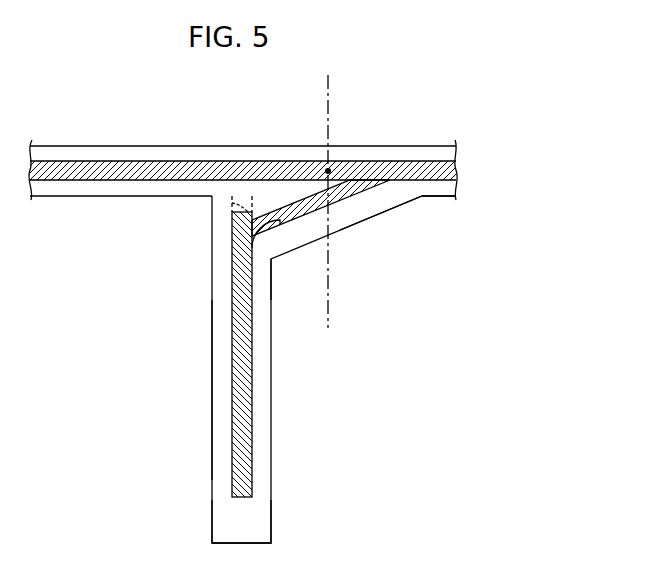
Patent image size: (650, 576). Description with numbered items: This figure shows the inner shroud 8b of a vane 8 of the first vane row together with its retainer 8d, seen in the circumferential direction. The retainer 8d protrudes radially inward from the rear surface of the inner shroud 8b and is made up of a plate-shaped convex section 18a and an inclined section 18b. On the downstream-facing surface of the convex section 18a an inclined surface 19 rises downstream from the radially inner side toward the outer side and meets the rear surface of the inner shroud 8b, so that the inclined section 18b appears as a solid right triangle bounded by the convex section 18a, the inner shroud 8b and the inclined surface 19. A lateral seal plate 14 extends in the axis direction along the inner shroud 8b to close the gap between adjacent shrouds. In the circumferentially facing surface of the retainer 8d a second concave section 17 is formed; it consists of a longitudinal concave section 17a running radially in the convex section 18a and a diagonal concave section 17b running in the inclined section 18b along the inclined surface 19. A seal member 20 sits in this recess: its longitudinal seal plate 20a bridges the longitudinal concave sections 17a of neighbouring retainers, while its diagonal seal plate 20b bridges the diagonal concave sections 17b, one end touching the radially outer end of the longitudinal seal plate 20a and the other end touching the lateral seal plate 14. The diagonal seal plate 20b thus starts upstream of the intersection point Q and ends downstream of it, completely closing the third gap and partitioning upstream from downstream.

The lateral seal plate 14 is at (106, 182).
The vane 8 is at (524, 158).
The inner shroud 8b is at (435, 197).
The retainer 8d is at (96, 400).
The second concave section 17 is at (96, 286).
The longitudinal concave section 17a is at (232, 229).
The diagonal concave section 17b is at (262, 240).
The convex section 18a is at (234, 524).
The inclined section 18b is at (292, 242).
The inclined surface 19 is at (385, 213).
The seal member 20 is at (453, 330).
The longitudinal seal plate 20a is at (240, 402).
The diagonal seal plate 20b is at (350, 195).
The intersection point Q is at (333, 170).